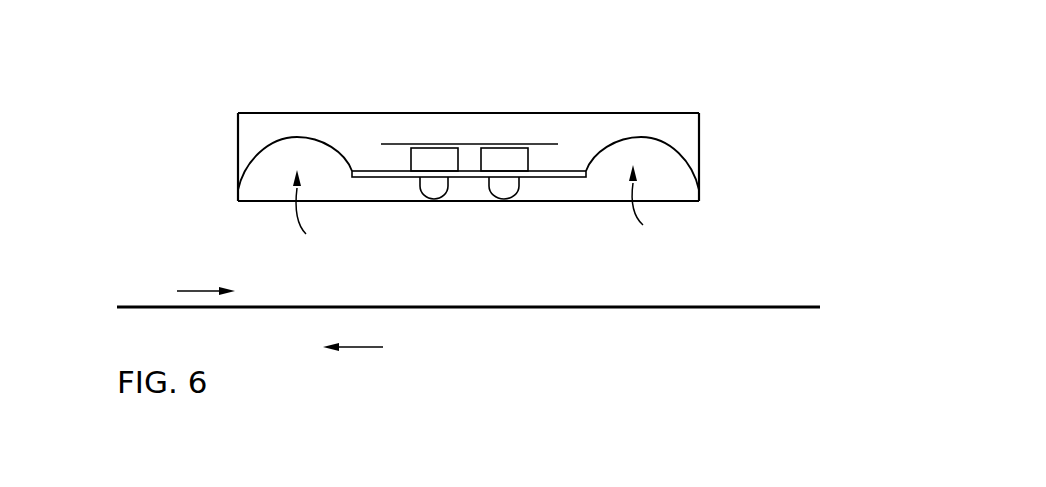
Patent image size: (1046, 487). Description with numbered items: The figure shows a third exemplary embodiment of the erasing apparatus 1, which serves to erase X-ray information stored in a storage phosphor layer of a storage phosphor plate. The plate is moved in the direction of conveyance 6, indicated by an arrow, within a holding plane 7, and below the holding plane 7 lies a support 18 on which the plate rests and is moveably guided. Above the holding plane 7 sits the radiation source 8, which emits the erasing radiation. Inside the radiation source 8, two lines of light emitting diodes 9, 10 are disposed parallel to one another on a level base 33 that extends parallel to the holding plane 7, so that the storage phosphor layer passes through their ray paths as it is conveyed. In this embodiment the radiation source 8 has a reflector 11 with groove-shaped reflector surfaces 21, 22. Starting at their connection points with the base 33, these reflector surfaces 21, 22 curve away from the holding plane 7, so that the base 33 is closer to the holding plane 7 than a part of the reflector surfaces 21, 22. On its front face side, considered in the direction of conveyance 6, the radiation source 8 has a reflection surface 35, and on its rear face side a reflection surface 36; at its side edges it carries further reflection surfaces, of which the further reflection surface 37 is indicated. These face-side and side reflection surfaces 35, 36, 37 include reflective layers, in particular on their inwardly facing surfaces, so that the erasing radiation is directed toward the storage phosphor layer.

The erasing apparatus 1 is at (228, 80).
The direction of conveyance 6 is at (362, 348).
The holding plane 7 is at (196, 291).
The radiation source 8 is at (667, 113).
The line of light emitting diodes 9 is at (449, 152).
The line of light emitting diodes 10 is at (497, 152).
The reflector 11 is at (472, 213).
The support 18 is at (780, 306).
The groove-shaped reflector surface 21 is at (281, 128).
The groove-shaped reflector surface 22 is at (626, 140).
The base 33 is at (572, 171).
The reflection surface 35 is at (238, 147).
The reflection surface 36 is at (700, 140).
The further reflection surface 37 is at (357, 148).